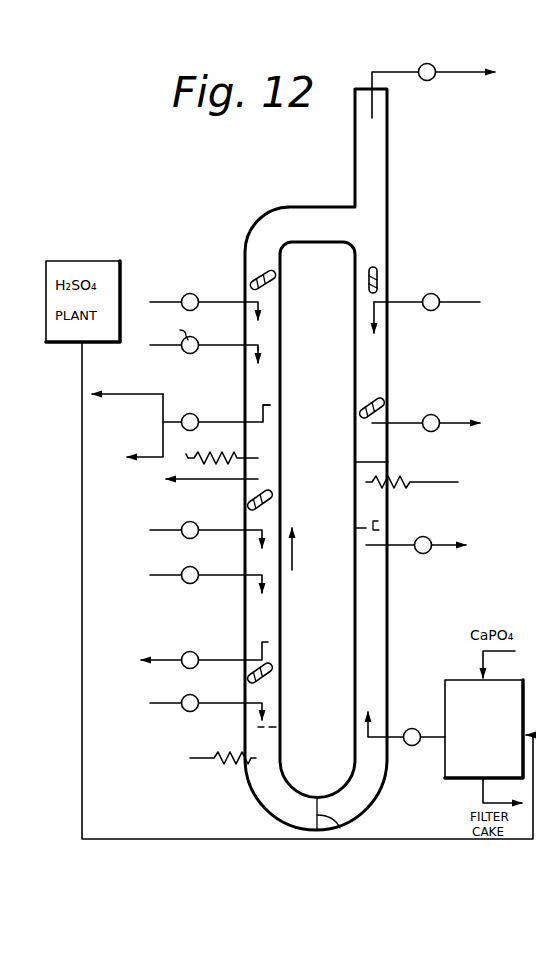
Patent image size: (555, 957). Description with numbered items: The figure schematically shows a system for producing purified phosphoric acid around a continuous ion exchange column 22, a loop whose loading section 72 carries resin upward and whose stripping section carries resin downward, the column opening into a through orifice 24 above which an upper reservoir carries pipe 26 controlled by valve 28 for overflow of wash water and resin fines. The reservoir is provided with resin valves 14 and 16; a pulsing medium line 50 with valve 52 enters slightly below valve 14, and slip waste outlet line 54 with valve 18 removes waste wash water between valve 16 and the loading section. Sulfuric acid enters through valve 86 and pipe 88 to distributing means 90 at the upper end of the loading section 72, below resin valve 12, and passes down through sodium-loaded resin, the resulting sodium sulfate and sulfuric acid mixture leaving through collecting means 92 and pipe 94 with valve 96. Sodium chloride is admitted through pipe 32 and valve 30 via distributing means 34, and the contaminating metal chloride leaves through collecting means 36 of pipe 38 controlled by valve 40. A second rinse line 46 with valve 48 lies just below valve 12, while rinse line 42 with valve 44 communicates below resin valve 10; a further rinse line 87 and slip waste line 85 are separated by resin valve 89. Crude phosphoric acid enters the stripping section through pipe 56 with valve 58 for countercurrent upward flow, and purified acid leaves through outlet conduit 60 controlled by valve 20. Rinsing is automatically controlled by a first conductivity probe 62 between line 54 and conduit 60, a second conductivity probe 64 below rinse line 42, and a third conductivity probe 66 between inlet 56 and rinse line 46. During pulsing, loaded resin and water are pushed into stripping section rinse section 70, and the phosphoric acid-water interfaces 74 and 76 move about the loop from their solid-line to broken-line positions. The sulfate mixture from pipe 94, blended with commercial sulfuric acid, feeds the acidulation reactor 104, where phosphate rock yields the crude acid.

The resin valve 10 is at (272, 667).
The resin valve 12 is at (276, 272).
The resin valve 14 is at (379, 272).
The resin valve 16 is at (384, 400).
The valve 18 is at (436, 431).
The valve 20 is at (426, 553).
The continuous ion exchange column 22 is at (262, 211).
The through orifice 24 is at (362, 231).
The pipe 26 is at (437, 84).
The valve 28 is at (434, 66).
The valve 30 is at (196, 570).
The pipe 32 is at (170, 562).
The distributing means 34 is at (264, 578).
The collecting means 36 is at (268, 642).
The pipe 38 is at (170, 646).
The valve 40 is at (198, 653).
The rinse line 42 is at (165, 703).
The valve 44 is at (198, 698).
The second rinse line 46 is at (238, 304).
The valve 48 is at (193, 299).
The pulsing medium line 50 is at (438, 312).
The valve 52 is at (438, 296).
The slip waste outlet line 54 is at (440, 422).
The pipe 56 is at (432, 734).
The valve 58 is at (410, 746).
The purified H3PO4 outlet conduit 60 is at (434, 542).
The first conductivity probe 62 is at (436, 486).
The second conductivity probe 64 is at (216, 758).
The third conductivity probe 66 is at (222, 448).
The stripping section rinse section 70 is at (257, 790).
The loading section 72 is at (267, 336).
The H3PO4 water interface 74 is at (374, 462).
The H3PO4 water interface 76 is at (256, 727).
The slip waste line 85 is at (179, 482).
The valve 86 is at (171, 331).
The rinse line 87 is at (230, 530).
The pipe 88 is at (238, 346).
The resin valve 89 is at (272, 492).
The distributing means 90 is at (262, 349).
The collecting means 92 is at (270, 405).
The pipe 94 is at (236, 412).
The valve 96 is at (184, 416).
The acidulation reactor 104 is at (516, 676).